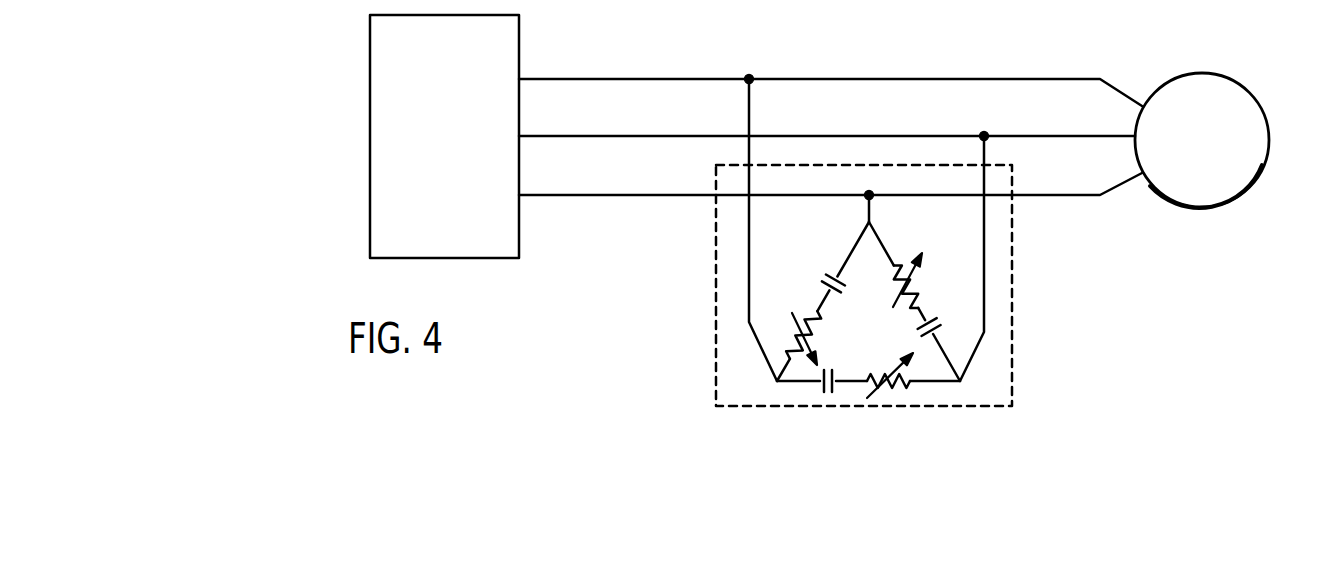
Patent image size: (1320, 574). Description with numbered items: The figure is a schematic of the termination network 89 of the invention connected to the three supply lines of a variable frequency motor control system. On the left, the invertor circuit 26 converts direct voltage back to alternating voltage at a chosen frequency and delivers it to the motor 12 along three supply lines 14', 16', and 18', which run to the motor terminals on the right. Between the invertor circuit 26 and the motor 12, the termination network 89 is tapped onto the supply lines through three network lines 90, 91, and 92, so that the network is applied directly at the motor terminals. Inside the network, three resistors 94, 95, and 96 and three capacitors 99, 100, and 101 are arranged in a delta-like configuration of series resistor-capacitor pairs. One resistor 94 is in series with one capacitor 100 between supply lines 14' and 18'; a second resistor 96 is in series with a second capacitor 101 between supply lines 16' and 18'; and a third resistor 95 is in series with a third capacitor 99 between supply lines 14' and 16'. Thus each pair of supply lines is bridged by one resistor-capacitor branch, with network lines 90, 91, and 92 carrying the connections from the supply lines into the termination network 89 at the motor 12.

The invertor circuit 26 is at (519, 49).
The supply line 14' is at (830, 67).
The supply line 16' is at (827, 117).
The supply line 18' is at (830, 175).
The motor 12 is at (1190, 207).
The network line 90 is at (749, 109).
The network line 92 is at (986, 154).
The network line 91 is at (870, 208).
The termination network 89 is at (998, 296).
The capacitor 100 is at (837, 270).
The resistor 94 is at (806, 350).
The resistor 96 is at (913, 300).
The capacitor 101 is at (920, 325).
The capacitor 99 is at (820, 387).
The resistor 95 is at (893, 385).